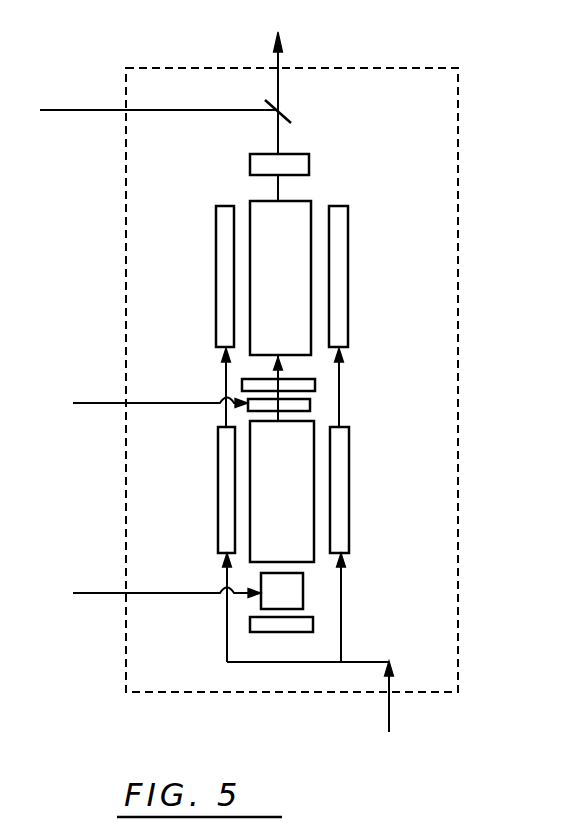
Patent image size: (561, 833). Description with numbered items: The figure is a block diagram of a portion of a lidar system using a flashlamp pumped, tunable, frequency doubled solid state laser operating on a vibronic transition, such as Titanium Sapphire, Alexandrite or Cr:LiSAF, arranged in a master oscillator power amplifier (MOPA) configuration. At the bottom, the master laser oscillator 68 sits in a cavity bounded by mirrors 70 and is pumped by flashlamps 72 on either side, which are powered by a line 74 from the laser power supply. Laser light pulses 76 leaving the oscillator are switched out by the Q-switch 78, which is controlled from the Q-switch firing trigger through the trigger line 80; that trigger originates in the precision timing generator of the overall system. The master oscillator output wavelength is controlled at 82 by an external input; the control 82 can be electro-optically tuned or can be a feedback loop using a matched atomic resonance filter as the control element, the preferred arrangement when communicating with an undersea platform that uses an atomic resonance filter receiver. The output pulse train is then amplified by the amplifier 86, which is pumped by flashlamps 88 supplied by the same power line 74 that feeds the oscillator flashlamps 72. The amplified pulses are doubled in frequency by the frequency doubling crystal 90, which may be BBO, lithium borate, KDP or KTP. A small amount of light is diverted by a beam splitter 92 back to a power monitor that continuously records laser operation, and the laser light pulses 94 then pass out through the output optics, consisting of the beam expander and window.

The master laser oscillator 68 is at (287, 484).
The mirrors 70 is at (315, 385).
The flashlamps 72 is at (218, 480).
The line from the laser power supply 74 is at (383, 709).
The laser light pulses 76 is at (275, 369).
The Q-switch 78 is at (303, 600).
The trigger line 80 is at (144, 594).
The wavelength control 82 is at (310, 403).
The amplifier 86 is at (284, 258).
The flashlamps 88 is at (216, 245).
The frequency doubling crystal 90 is at (309, 160).
The beam splitter 92 is at (293, 118).
The laser light pulses 94 is at (275, 40).